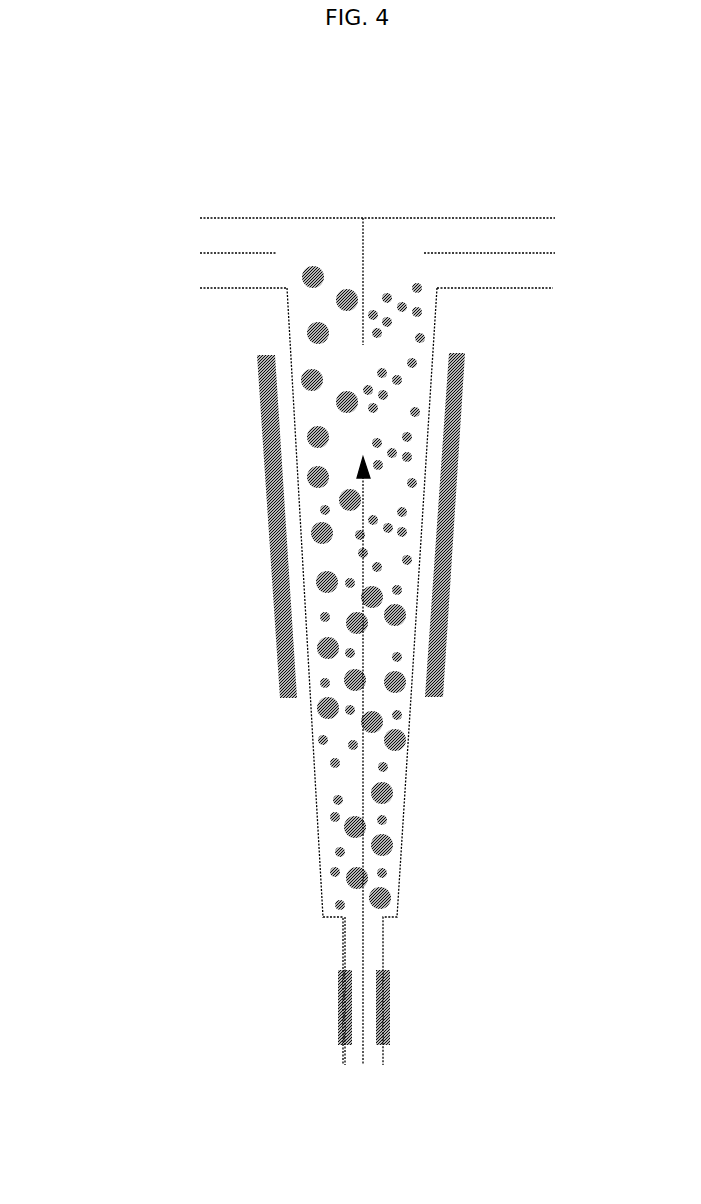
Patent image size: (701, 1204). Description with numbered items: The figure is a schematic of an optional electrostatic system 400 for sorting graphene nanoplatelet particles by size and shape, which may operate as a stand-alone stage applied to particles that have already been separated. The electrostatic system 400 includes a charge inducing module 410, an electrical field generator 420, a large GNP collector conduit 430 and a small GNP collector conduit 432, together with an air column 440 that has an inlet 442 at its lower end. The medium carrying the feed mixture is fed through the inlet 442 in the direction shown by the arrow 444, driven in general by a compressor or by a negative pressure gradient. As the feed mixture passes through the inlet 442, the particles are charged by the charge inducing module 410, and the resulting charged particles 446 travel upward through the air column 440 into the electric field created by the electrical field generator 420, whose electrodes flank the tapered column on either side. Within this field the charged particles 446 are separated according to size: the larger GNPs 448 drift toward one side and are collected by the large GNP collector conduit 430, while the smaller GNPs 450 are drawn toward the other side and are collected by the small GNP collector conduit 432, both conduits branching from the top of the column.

The electrostatic system 400 is at (365, 184).
The charge inducing module 410 is at (388, 988).
The electrical field generator 420 is at (455, 450).
The large GNP collector conduit 430 is at (218, 277).
The small GNP collector conduit 432 is at (493, 245).
The air column 440 is at (410, 728).
The inlet 442 is at (370, 1062).
The arrow 444 is at (362, 568).
The charged particles 446 is at (340, 775).
The larger GNPs 448 is at (308, 263).
The smaller GNPs 450 is at (390, 395).